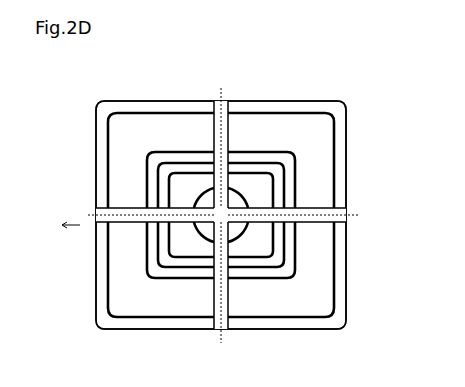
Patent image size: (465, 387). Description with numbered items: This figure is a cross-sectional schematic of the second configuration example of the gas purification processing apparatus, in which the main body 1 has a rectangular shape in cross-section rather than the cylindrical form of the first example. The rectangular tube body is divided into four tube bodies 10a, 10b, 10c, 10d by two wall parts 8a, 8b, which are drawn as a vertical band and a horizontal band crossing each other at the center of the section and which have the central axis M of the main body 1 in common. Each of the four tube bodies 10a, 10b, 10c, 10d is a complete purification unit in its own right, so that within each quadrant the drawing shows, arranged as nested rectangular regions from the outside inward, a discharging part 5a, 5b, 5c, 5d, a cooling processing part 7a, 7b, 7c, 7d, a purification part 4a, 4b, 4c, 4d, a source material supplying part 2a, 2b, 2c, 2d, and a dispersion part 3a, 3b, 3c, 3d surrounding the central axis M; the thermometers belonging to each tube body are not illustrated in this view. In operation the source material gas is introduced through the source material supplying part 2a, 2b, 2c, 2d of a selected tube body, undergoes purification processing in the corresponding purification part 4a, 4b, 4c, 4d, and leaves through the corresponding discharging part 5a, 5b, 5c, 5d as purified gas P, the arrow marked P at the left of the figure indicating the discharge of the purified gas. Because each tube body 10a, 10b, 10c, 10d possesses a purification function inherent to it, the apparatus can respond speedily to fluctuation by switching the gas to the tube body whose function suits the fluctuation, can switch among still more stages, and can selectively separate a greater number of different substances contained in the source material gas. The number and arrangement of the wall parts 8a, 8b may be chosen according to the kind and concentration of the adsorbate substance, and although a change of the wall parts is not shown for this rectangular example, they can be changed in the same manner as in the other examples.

The main body 1 is at (354, 92).
The tube body 10a is at (167, 100).
The tube body 10b is at (103, 325).
The tube body 10c is at (340, 325).
The tube body 10d is at (272, 101).
The discharging part 5a is at (100, 196).
The discharging part 5b is at (104, 244).
The discharging part 5c is at (341, 252).
The discharging part 5d is at (249, 107).
The cooling processing part 7a is at (148, 183).
The cooling processing part 7b is at (157, 277).
The cooling processing part 7c is at (286, 278).
The cooling processing part 7d is at (289, 157).
The purification part 4a is at (125, 185).
The purification part 4b is at (127, 264).
The purification part 4c is at (315, 269).
The purification part 4d is at (284, 130).
The source material supplying part 2a is at (183, 186).
The source material supplying part 2b is at (178, 256).
The source material supplying part 2c is at (268, 256).
The source material supplying part 2d is at (272, 188).
The dispersion part 3a is at (175, 178).
The dispersion part 3b is at (202, 250).
The dispersion part 3c is at (245, 250).
The dispersion part 3d is at (252, 190).
The wall part 8a is at (213, 110).
The wall part 8b is at (312, 208).
The central axis M is at (221, 215).
The purified gas P is at (60, 224).